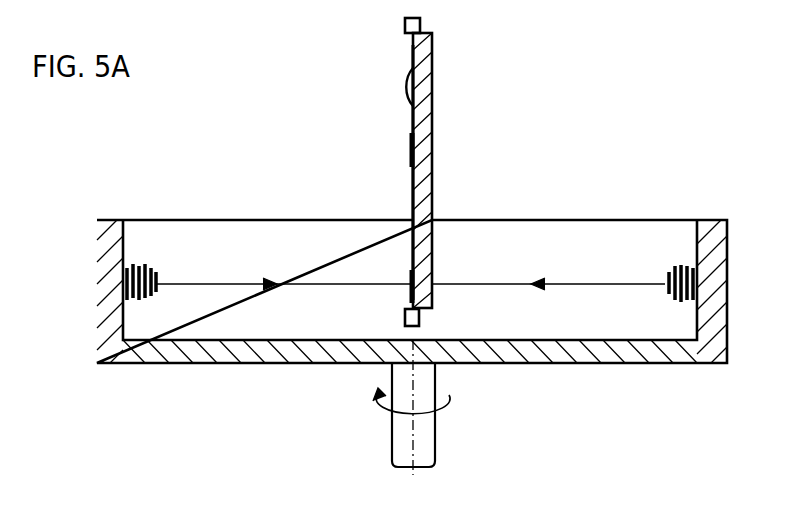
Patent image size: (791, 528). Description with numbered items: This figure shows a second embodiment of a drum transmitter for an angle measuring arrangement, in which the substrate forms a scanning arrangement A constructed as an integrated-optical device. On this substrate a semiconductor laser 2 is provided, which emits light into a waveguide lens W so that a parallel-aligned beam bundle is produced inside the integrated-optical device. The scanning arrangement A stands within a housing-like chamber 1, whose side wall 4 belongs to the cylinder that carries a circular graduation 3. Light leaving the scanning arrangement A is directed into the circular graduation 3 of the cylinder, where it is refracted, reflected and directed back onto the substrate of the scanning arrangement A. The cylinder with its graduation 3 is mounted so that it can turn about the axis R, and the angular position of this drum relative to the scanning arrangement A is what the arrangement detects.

The deposition chamber 1 is at (330, 380).
The semiconductor laser 2 is at (420, 24).
The circular graduation 3 is at (688, 266).
The cylinder 4 is at (707, 352).
The scanning arrangement A is at (432, 167).
The waveguide lens W is at (407, 90).
The rotation axis / shaft R is at (415, 435).